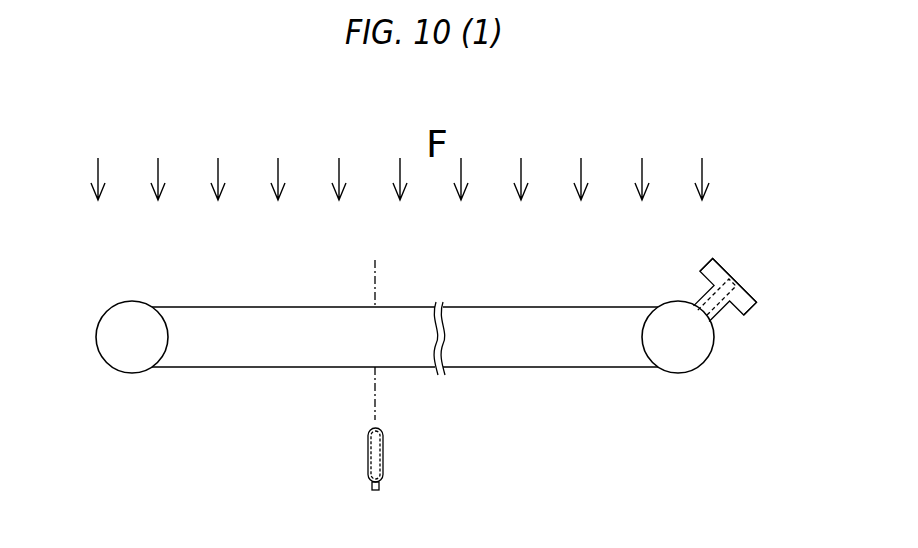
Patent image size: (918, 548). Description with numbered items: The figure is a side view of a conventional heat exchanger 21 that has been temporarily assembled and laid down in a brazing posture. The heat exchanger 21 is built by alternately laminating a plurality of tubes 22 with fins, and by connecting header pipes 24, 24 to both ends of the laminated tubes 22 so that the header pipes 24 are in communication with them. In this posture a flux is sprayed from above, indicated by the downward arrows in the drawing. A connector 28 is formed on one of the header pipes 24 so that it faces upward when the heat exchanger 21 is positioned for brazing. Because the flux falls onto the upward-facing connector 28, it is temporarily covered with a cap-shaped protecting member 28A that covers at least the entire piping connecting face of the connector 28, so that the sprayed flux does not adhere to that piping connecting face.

The heat exchanger 21 is at (448, 347).
The tubes 22 is at (245, 353).
The header pipes 24 is at (118, 353).
The connector 28 is at (723, 318).
The protecting member 28A is at (737, 282).